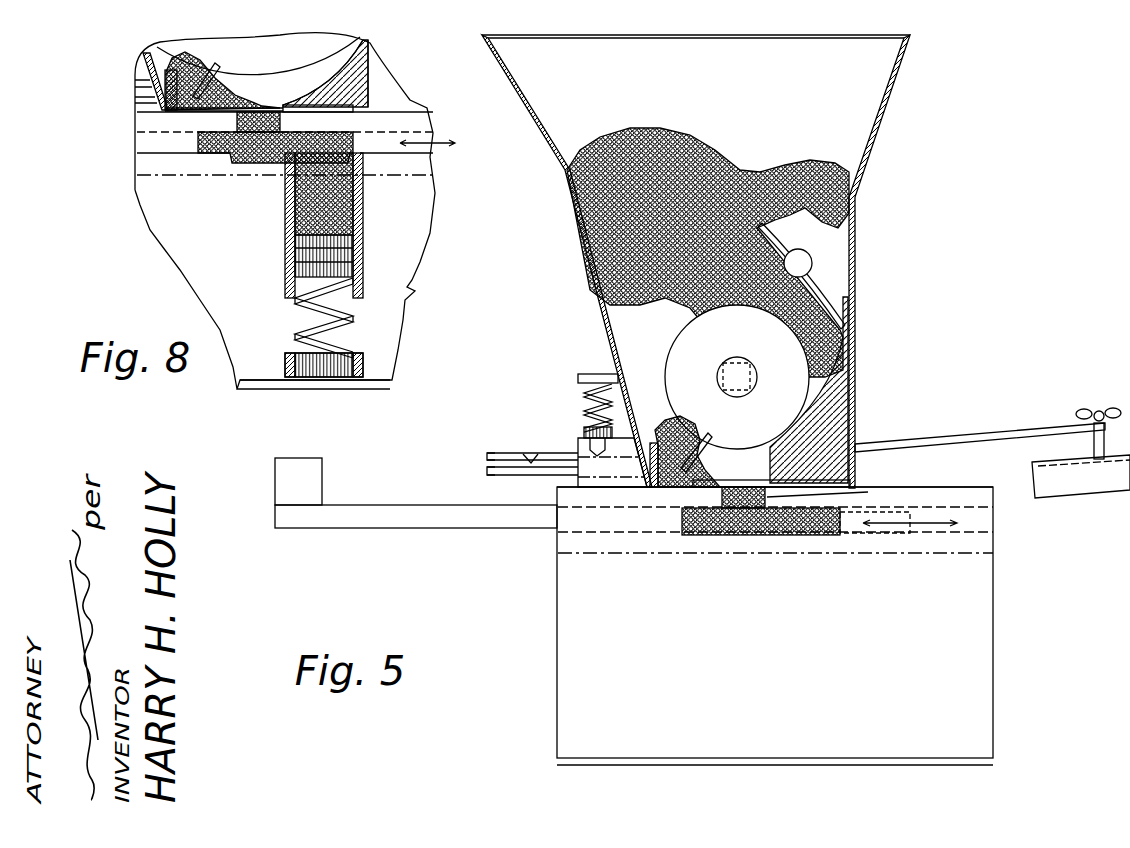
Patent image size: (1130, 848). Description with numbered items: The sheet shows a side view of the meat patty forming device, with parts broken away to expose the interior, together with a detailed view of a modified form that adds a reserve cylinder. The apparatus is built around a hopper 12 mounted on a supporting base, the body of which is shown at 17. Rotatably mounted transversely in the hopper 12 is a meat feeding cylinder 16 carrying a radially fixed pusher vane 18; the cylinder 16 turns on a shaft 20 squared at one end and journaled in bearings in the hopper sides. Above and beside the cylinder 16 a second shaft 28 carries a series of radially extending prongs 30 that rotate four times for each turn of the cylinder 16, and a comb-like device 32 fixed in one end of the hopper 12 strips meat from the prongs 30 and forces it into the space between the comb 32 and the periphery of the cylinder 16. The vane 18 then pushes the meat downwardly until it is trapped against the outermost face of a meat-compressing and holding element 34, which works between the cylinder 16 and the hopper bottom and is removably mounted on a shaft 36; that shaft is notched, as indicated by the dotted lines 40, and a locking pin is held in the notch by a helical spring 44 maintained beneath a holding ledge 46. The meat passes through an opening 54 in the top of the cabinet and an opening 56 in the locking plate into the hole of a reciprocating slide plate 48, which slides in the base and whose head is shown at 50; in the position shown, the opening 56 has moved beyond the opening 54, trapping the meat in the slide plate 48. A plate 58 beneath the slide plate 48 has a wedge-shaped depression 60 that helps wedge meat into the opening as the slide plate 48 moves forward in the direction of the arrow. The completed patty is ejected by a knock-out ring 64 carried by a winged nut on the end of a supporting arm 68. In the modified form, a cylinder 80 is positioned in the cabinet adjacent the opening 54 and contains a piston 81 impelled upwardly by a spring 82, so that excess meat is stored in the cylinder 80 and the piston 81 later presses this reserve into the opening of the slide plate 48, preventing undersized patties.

In FIG. 5, the hopper 12 is at (603, 288).
In FIG. 8, the meat feeding cylinder 16 is at (241, 53).
In FIG. 5, the meat feeding cylinder 16 is at (790, 402).
In FIG. 8, the base housing 17 is at (183, 253).
In FIG. 5, the base housing 17 is at (582, 658).
In FIG. 8, the pusher vane 18 is at (217, 78).
In FIG. 5, the pusher vane 18 is at (700, 457).
In FIG. 5, the shaft 20 is at (717, 375).
In FIG. 5, the shaft 28 is at (803, 263).
In FIG. 5, the prongs 30 is at (800, 163).
In FIG. 5, the comb-like device 32 is at (820, 297).
In FIG. 8, the meat-compressing and holding element 34 is at (150, 70).
In FIG. 5, the meat-compressing and holding element 34 is at (648, 487).
In FIG. 5, the shaft 36 is at (495, 453).
In FIG. 5, the notch 40 is at (525, 457).
In FIG. 5, the helical spring 44 is at (587, 400).
In FIG. 5, the holding ledge 46 is at (600, 373).
In FIG. 8, the reciprocating slide plate 48 is at (150, 143).
In FIG. 5, the reciprocating slide plate 48 is at (458, 520).
In FIG. 5, the slide bar head 50 is at (310, 483).
In FIG. 8, the opening 54 is at (237, 121).
In FIG. 5, the opening 54 is at (868, 492).
In FIG. 5, the opening 56 is at (678, 487).
In FIG. 5, the plate 58 is at (842, 545).
In FIG. 5, the wedge-shaped depression 60 is at (742, 537).
In FIG. 5, the ring 64 is at (1093, 487).
In FIG. 5, the supporting arm 68 is at (943, 440).
In FIG. 8, the cylinder 80 is at (290, 215).
In FIG. 8, the piston 81 is at (340, 257).
In FIG. 8, the spring 82 is at (303, 317).